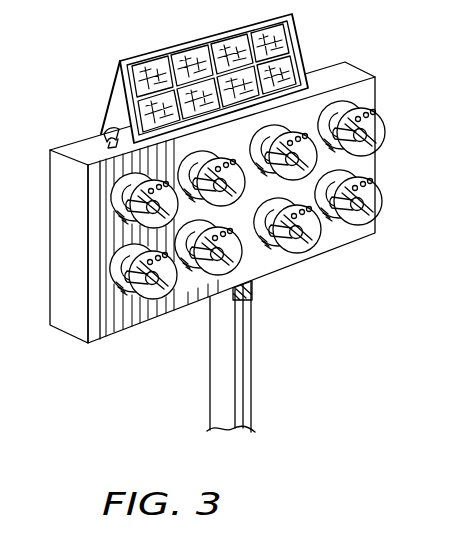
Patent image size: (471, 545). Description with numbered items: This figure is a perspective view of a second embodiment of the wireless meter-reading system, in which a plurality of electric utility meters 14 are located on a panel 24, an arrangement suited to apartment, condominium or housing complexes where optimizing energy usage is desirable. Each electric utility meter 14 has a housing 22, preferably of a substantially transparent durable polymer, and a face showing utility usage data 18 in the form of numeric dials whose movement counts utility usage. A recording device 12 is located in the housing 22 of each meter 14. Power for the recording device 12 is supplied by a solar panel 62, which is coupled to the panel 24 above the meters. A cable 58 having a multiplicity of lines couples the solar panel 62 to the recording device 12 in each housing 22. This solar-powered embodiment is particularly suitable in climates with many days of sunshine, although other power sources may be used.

The recording device 12 is at (361, 213).
The electric utility meter 14 is at (226, 190).
The utility usage data 18 is at (300, 134).
The housing 22 is at (222, 268).
The panel 24 is at (273, 263).
The cable 58 is at (106, 131).
The solar panel 62 is at (288, 43).